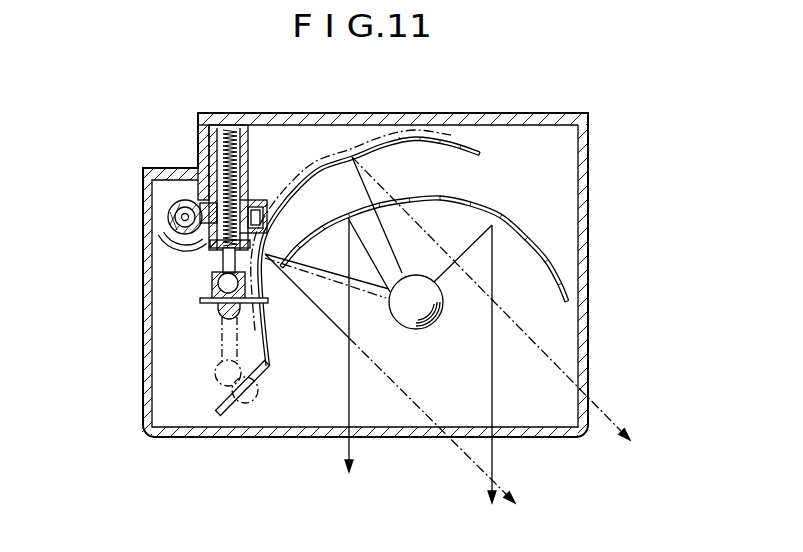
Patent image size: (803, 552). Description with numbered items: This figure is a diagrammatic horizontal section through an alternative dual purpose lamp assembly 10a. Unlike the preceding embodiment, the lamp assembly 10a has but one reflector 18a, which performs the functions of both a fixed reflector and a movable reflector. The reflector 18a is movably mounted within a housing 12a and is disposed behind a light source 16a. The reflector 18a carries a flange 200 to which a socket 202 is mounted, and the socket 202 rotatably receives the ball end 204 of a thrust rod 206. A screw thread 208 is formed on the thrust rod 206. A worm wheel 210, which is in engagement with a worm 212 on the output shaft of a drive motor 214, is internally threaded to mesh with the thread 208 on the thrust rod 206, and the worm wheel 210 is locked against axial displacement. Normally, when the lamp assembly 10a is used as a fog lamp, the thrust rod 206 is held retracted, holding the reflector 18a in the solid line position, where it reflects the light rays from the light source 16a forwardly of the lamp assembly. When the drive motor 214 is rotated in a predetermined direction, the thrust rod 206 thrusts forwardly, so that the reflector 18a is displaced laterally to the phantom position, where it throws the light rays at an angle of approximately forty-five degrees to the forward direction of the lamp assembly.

The dual purpose lamp assembly 10a is at (607, 138).
The housing 12a is at (497, 113).
The reflector 18a is at (493, 223).
The light source 16a is at (427, 329).
The screw thread 208 is at (226, 158).
The worm wheel 210 is at (258, 201).
The drive motor 214 is at (163, 193).
The worm 212 is at (173, 218).
The thrust rod 206 is at (226, 263).
The flange 200 is at (207, 303).
The socket 202 is at (210, 291).
The ball end 204 is at (256, 345).